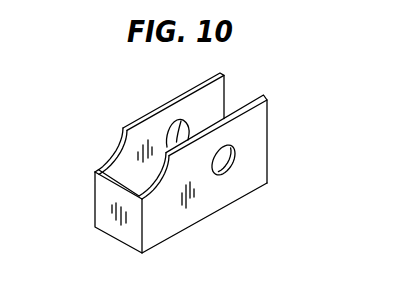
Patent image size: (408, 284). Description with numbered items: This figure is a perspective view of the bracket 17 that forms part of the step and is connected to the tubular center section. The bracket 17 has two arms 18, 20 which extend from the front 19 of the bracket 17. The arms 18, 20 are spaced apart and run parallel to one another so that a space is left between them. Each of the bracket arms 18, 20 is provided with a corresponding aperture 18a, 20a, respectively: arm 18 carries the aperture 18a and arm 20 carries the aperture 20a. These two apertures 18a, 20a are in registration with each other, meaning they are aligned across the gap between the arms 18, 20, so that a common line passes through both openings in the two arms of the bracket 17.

The bracket 17 is at (187, 157).
The bracket arm 18 is at (148, 128).
The aperture 18a is at (180, 131).
The front 19 is at (105, 203).
The bracket arm 20 is at (258, 119).
The aperture 20a is at (236, 163).